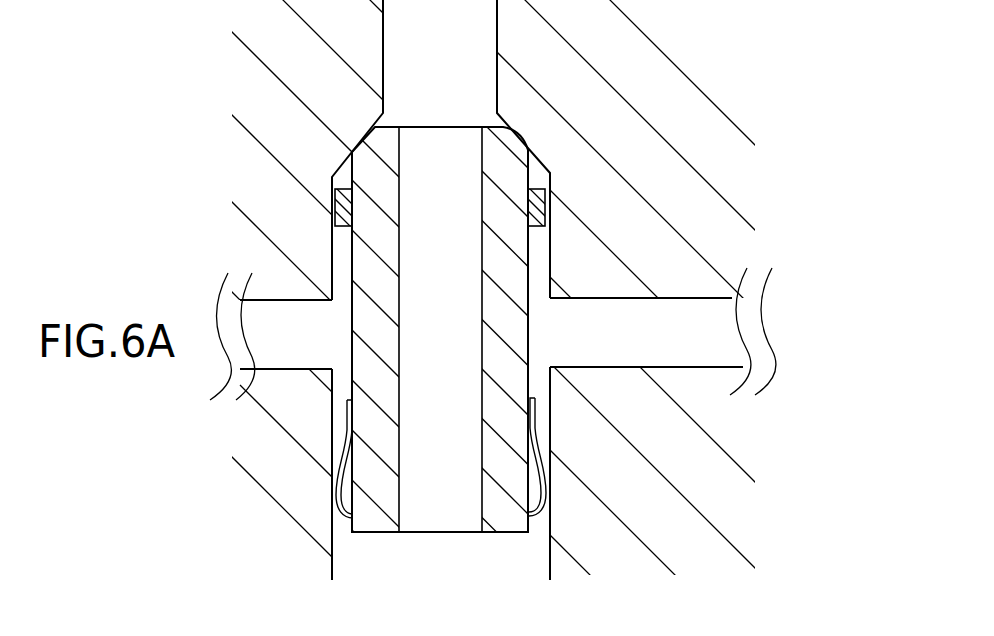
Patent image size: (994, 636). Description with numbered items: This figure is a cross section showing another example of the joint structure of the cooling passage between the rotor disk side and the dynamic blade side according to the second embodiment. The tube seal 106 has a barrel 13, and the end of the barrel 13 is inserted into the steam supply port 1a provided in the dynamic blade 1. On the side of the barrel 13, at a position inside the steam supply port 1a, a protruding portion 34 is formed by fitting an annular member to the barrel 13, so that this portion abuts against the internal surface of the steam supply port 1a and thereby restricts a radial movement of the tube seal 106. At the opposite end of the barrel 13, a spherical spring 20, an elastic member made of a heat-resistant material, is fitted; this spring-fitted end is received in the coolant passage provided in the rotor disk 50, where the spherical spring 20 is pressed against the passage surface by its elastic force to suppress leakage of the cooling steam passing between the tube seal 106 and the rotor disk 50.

The dynamic blade 1 is at (667, 102).
The steam supply port 1a is at (323, 190).
The barrel 13 is at (530, 152).
The protruding portion 34 is at (540, 205).
The rotor disk 50 is at (675, 440).
The spherical spring 20 is at (340, 458).
The tube seal 106 is at (332, 338).